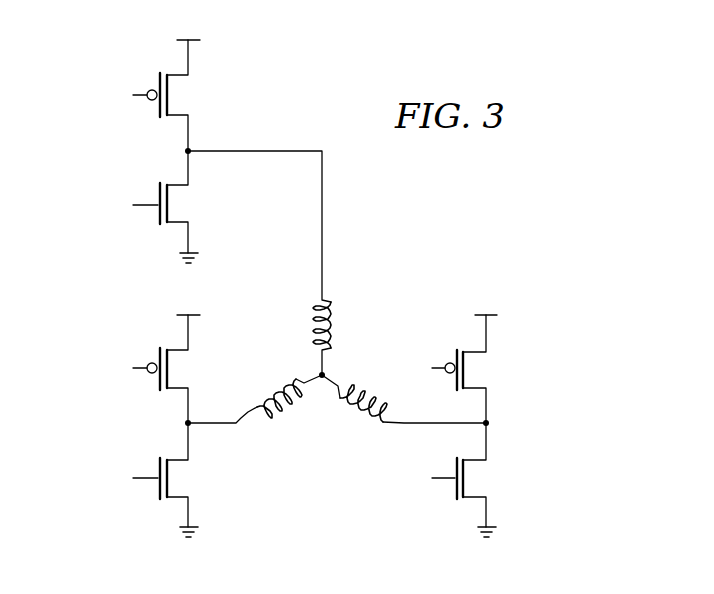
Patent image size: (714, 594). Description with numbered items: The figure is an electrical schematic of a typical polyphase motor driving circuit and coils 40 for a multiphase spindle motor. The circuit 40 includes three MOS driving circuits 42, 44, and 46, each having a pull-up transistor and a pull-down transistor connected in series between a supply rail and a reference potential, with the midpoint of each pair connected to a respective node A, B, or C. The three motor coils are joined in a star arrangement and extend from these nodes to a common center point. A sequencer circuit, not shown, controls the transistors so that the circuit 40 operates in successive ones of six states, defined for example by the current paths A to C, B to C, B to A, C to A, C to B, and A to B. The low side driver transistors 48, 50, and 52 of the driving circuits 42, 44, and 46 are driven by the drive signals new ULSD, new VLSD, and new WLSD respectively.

The polyphase motor driving circuit and coils 40 is at (460, 238).
The MOS driving circuit 42 is at (81, 125).
The MOS driving circuit 44 is at (81, 396).
The MOS driving circuit 46 is at (531, 401).
The low side driver transistor 48 is at (160, 215).
The low side driver transistor 50 is at (160, 488).
The low side driver transistor 52 is at (458, 488).